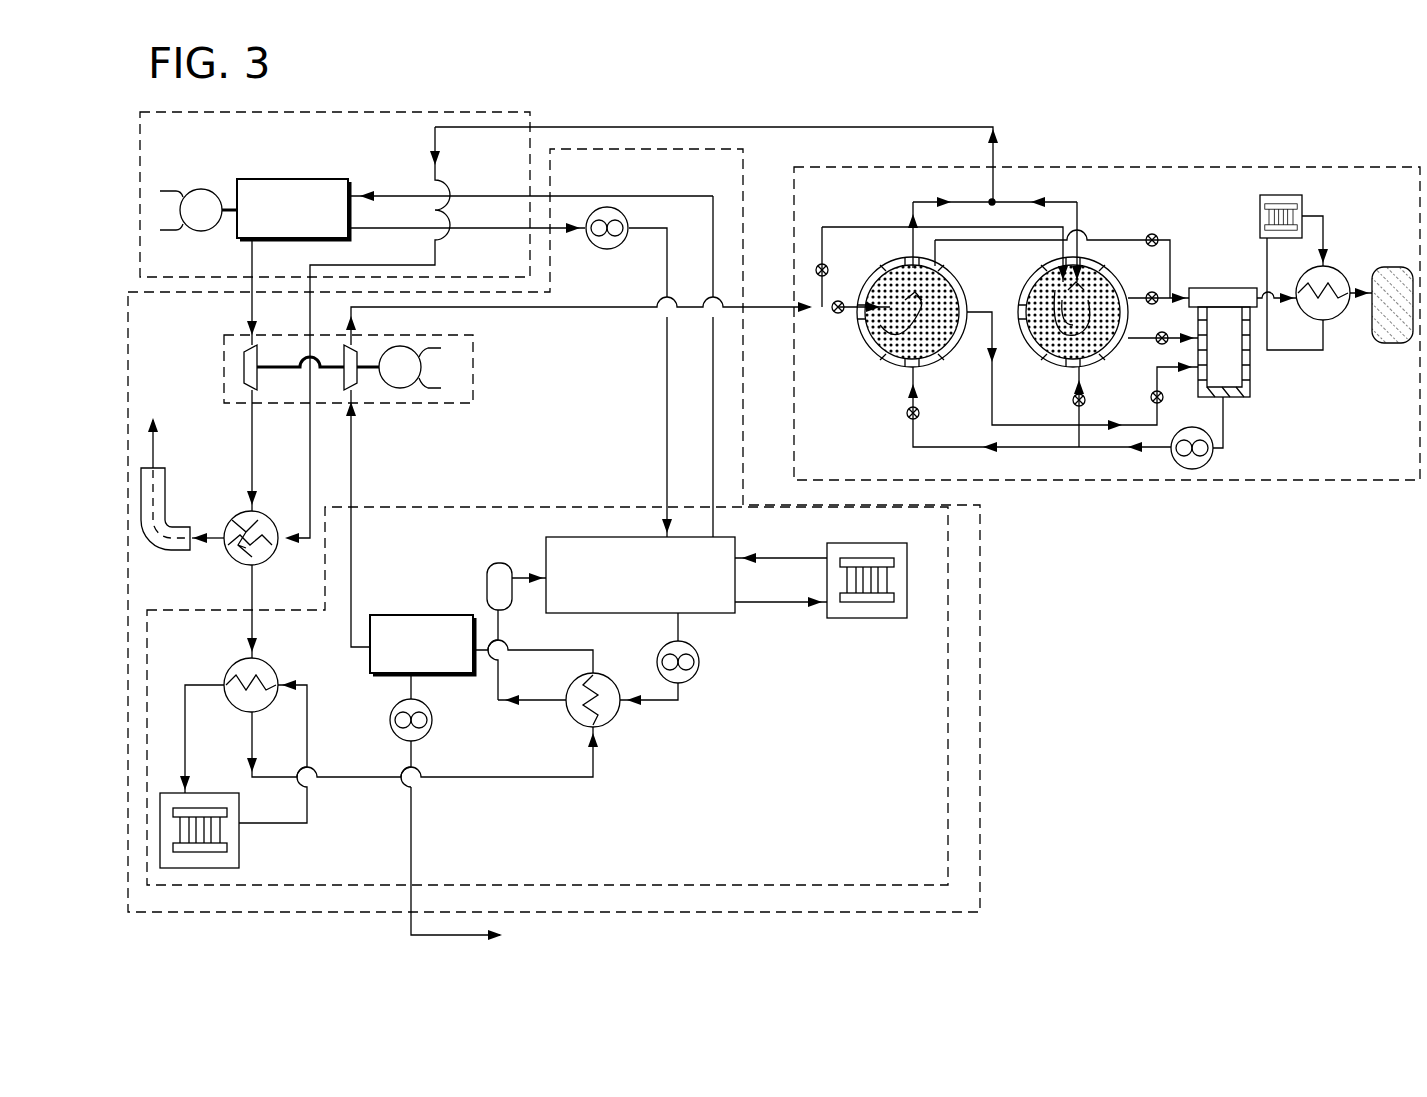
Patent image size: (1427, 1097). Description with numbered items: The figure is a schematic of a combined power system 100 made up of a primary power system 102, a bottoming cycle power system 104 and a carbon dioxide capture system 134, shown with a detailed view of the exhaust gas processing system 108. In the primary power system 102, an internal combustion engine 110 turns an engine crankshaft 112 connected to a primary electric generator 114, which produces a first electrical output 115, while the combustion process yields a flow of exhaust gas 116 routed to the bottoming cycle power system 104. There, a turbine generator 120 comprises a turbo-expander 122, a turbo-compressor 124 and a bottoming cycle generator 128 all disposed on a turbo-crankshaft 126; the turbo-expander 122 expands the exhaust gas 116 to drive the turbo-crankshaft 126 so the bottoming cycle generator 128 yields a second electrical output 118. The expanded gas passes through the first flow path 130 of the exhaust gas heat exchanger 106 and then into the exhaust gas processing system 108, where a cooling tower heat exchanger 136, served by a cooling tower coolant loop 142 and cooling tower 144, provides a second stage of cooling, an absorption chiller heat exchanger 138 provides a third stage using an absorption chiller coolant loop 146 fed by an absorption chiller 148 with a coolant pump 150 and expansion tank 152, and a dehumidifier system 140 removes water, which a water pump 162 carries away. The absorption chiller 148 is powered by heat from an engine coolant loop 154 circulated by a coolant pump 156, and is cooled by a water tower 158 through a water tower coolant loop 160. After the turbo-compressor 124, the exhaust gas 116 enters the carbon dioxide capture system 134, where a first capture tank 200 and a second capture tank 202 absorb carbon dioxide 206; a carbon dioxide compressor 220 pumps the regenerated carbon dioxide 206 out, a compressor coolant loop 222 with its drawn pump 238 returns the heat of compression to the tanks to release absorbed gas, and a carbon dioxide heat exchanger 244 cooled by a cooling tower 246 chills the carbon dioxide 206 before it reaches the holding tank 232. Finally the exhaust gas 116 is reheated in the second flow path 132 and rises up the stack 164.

The combined power system 100 is at (902, 106).
The primary power system 102 is at (373, 107).
The bottoming cycle power system 104 is at (990, 633).
The exhaust gas heat exchanger 106 is at (230, 521).
The exhaust gas processing system 108 is at (962, 699).
The internal combustion engine 110 is at (293, 209).
The engine crankshaft 112 is at (226, 216).
The primary electric generator 114 is at (210, 190).
The first electrical output 115 is at (161, 191).
The exhaust gas 116 is at (620, 127).
The second electrical output 118 is at (440, 364).
The turbine generator 120 is at (442, 413).
The turbo-expander 122 is at (243, 360).
The turbo-compressor 124 is at (352, 345).
The turbo-crankshaft 126 is at (329, 372).
The bottoming cycle generator 128 is at (406, 347).
The first flow path 130 is at (241, 561).
The second flow path 132 is at (268, 512).
The carbon dioxide capture system 134 is at (1180, 153).
The cooling tower heat exchanger 136 is at (267, 666).
The absorption chiller heat exchanger 138 is at (610, 720).
The dehumidifier system 140 is at (422, 645).
The cooling tower coolant loop 142 is at (307, 815).
The cooling tower 144 is at (240, 857).
The absorption chiller coolant loop 146 is at (663, 703).
The absorption chiller 148 is at (640, 575).
The coolant pump 150 is at (700, 665).
The expansion tank 152 is at (487, 583).
The engine coolant loop 154 is at (617, 196).
The coolant pump 156 is at (596, 250).
The water tower 158 is at (862, 620).
The water tower coolant loop 160 is at (430, 935).
The water pump 162 is at (432, 731).
The stack 164 is at (167, 482).
The first capture tank 200 is at (857, 359).
The second capture tank 202 is at (1037, 363).
The carbon dioxide 206 is at (1131, 300).
The carbon dioxide compressor 220 is at (1245, 288).
The compressor coolant loop 222 is at (912, 446).
The holding tank 232 is at (1398, 267).
The pump 238 is at (1213, 455).
The carbon dioxide heat exchanger 244 is at (1341, 276).
The cooling tower 246 is at (1277, 196).